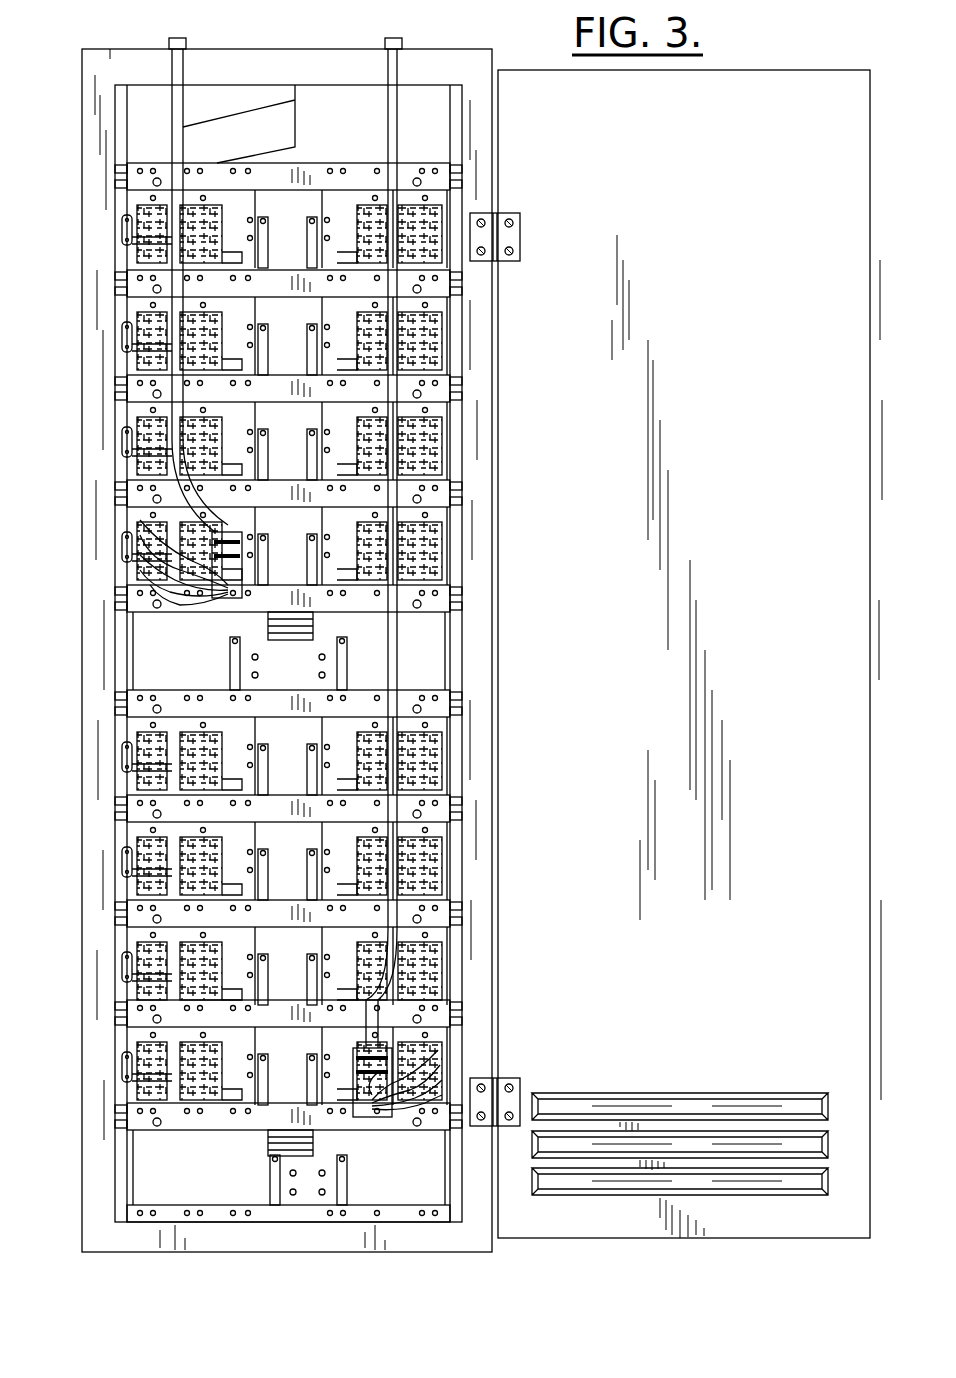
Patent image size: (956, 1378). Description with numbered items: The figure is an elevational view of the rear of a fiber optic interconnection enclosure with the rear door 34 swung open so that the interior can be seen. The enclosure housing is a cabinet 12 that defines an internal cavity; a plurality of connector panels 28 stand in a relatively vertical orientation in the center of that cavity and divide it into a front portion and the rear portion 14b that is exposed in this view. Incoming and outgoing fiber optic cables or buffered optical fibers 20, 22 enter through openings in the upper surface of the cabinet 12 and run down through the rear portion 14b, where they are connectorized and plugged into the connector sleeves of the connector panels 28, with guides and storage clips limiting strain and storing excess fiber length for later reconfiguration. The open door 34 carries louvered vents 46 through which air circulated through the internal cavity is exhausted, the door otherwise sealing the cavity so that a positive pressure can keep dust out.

The cabinet 12 is at (102, 246).
The rear portion 14b is at (430, 132).
The fiber optic cable 20 is at (401, 40).
The fiber optic cable 22 is at (185, 40).
The connector panel 28 is at (153, 211).
The door 34 is at (784, 85).
The vent 46 is at (775, 1103).